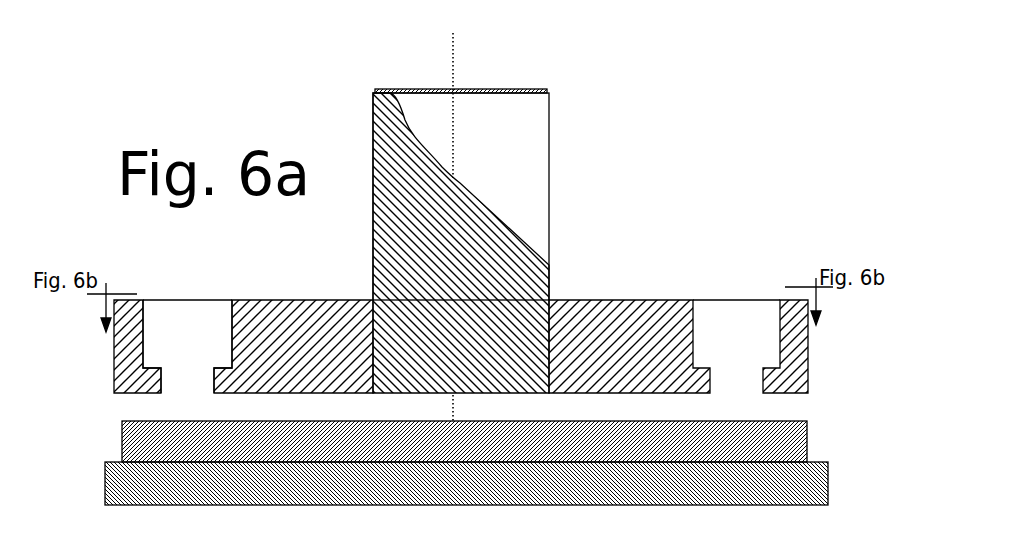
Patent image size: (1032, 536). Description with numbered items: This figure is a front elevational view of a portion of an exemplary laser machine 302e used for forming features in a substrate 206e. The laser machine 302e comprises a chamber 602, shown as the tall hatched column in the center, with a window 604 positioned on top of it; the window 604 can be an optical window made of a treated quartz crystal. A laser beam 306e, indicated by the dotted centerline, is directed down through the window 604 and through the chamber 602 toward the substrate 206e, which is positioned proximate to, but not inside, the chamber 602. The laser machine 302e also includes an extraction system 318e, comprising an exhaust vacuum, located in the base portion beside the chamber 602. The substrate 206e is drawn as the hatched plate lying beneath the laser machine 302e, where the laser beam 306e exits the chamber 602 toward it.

The laser machine 302e is at (660, 93).
The chamber 602 is at (551, 216).
The window 604 is at (425, 89).
The laser beam 306e is at (455, 61).
The extraction system 318e is at (218, 347).
The substrate 206e is at (712, 453).